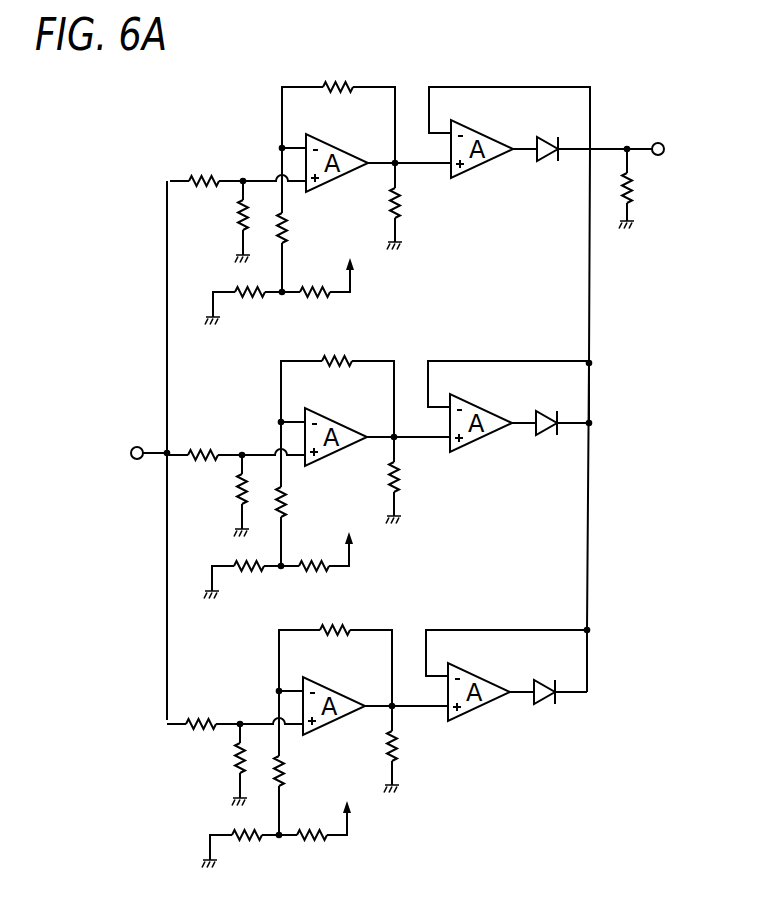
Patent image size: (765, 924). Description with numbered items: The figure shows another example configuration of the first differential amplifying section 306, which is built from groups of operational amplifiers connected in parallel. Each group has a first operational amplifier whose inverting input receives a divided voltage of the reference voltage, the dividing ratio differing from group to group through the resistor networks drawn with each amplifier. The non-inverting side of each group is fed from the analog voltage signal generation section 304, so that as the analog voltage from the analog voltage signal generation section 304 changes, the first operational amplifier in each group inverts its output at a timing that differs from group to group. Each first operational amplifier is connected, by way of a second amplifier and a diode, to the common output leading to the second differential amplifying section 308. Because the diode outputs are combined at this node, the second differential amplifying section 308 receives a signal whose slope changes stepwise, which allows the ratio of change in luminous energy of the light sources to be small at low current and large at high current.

The analog voltage signal generation section 304 is at (120, 454).
The first differential amplifying section 306 is at (600, 62).
The second differential amplifying section 308 is at (657, 183).